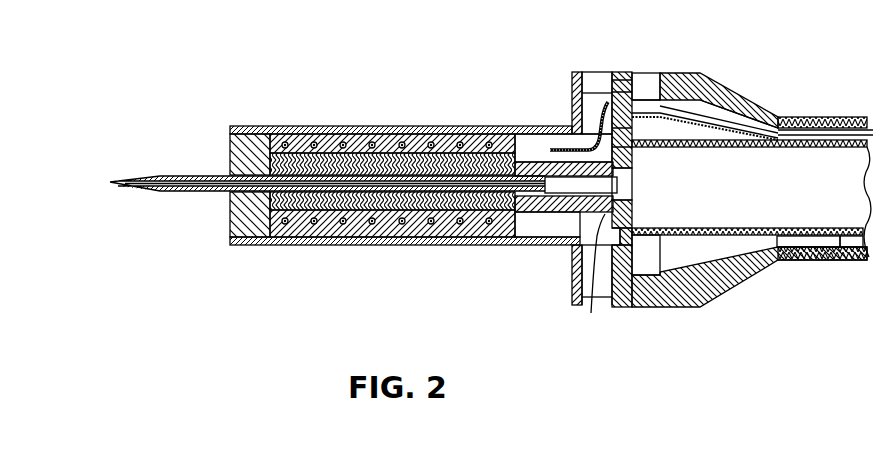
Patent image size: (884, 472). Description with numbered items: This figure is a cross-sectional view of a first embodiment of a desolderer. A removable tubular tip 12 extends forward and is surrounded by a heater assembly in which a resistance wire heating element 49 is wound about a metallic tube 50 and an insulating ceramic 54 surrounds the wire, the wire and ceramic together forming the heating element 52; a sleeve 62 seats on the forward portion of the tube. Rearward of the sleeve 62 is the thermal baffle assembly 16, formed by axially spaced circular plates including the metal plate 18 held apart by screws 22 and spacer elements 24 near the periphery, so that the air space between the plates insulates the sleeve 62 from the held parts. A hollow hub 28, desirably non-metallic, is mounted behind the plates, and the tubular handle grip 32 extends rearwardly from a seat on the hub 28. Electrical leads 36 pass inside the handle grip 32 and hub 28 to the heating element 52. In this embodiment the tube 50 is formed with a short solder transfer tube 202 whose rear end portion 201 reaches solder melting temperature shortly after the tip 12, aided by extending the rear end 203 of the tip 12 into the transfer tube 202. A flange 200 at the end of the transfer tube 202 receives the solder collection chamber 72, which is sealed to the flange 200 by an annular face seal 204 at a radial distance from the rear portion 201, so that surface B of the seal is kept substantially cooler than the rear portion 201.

The tubular tip 12 is at (186, 176).
The thermal baffle assembly 16 is at (626, 62).
The circular plate 18 is at (574, 265).
The screws 22 is at (570, 82).
The spacer elements 24 is at (604, 76).
The hollow hub 28 is at (735, 94).
The tubular handle grip 32 is at (845, 262).
The electrical leads 36 is at (852, 127).
The resistance wire heating element 49 is at (338, 142).
The metallic tube 50 is at (417, 203).
The heating element 52 is at (346, 252).
The insulating ceramic 54 is at (390, 150).
The sleeve 62 is at (470, 126).
The solder collection chamber 72 is at (777, 232).
The flange 200 is at (592, 276).
The rear end portion 201 is at (620, 186).
The solder transfer tube 202 is at (548, 214).
The rear end of tip 203 is at (548, 165).
The face seal 204 is at (632, 218).
The surface of face seal B is at (632, 238).